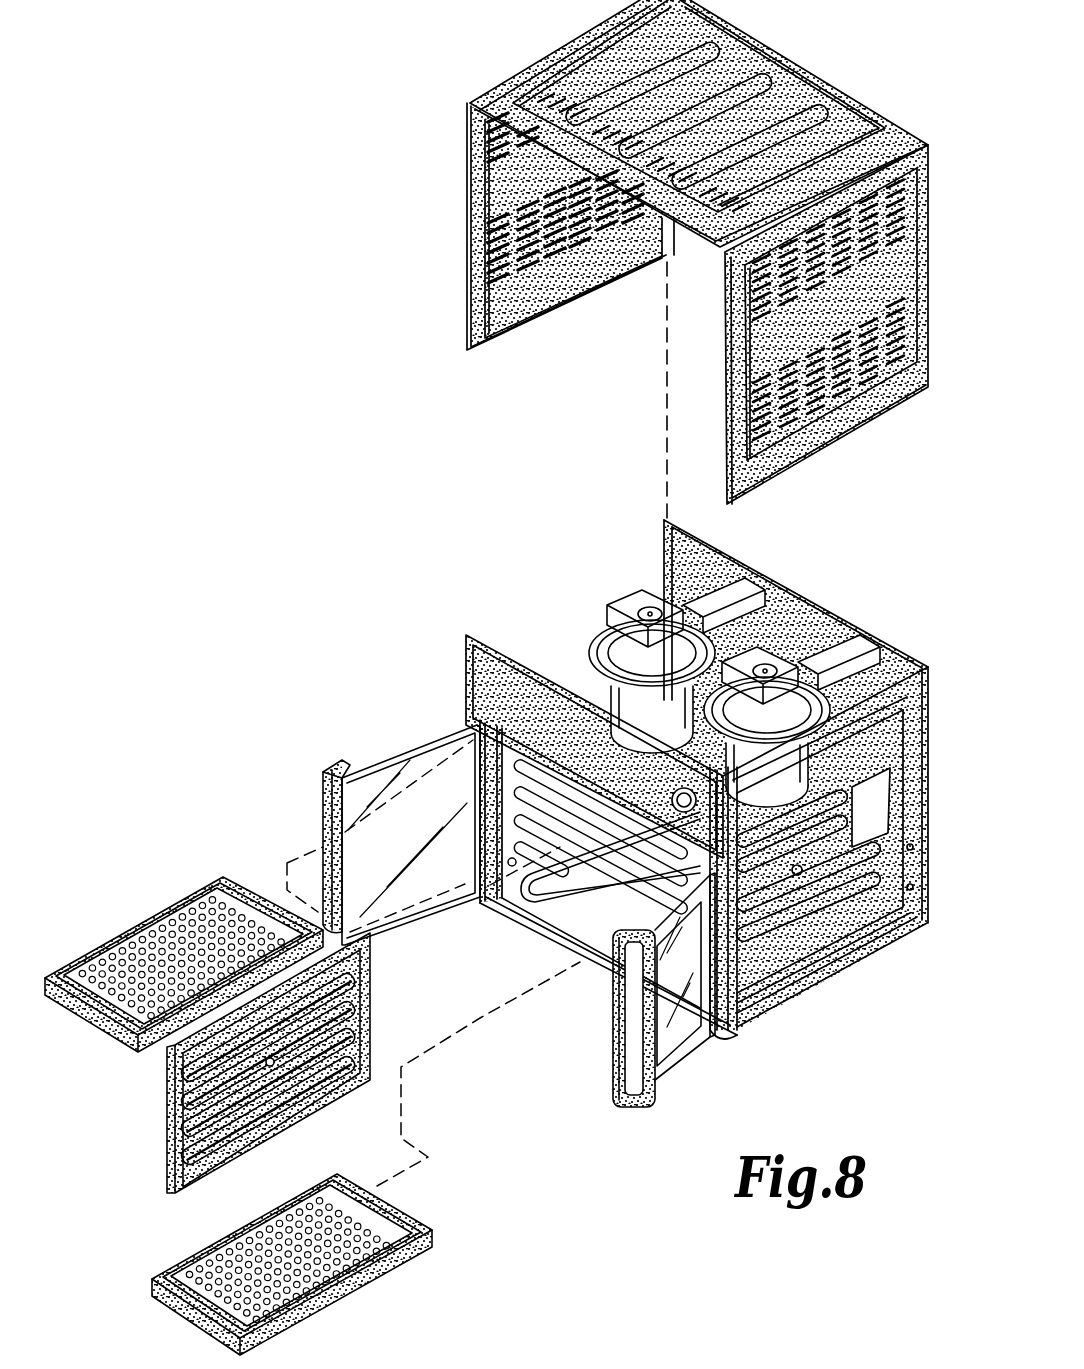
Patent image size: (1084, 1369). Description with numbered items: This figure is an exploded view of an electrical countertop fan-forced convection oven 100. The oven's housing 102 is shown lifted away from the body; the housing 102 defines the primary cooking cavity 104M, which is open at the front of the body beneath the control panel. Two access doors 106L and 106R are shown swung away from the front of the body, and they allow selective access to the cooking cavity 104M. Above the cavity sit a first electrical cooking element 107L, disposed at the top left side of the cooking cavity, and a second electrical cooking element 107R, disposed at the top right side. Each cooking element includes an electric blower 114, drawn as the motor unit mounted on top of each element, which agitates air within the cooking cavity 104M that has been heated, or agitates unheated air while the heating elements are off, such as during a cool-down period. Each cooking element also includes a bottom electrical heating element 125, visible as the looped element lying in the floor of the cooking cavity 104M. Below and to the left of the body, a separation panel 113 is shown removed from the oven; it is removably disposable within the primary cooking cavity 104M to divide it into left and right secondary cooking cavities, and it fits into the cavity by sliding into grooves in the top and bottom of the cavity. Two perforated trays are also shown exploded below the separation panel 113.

The convection oven 100 is at (480, 53).
The housing 102 is at (775, 568).
The primary cooking cavity 104M is at (572, 878).
The left access door 106L is at (415, 740).
The right access door 106R is at (657, 1093).
The first electrical cooking element 107L is at (598, 636).
The second electrical cooking element 107R is at (826, 748).
The separation panel 113 is at (167, 1142).
The electric blower 114 is at (617, 600).
The bottom electrical heating element 125 is at (607, 890).